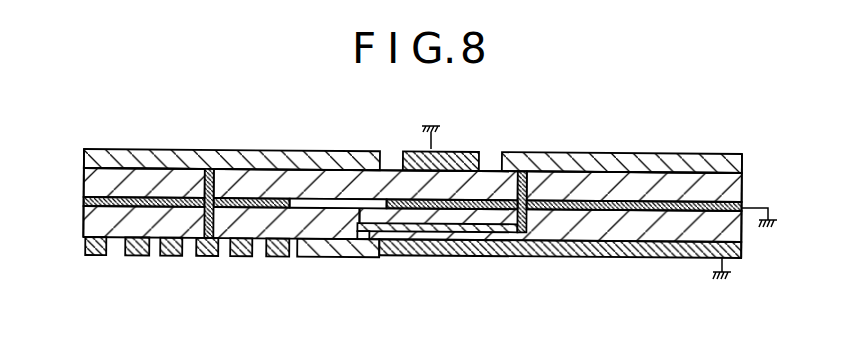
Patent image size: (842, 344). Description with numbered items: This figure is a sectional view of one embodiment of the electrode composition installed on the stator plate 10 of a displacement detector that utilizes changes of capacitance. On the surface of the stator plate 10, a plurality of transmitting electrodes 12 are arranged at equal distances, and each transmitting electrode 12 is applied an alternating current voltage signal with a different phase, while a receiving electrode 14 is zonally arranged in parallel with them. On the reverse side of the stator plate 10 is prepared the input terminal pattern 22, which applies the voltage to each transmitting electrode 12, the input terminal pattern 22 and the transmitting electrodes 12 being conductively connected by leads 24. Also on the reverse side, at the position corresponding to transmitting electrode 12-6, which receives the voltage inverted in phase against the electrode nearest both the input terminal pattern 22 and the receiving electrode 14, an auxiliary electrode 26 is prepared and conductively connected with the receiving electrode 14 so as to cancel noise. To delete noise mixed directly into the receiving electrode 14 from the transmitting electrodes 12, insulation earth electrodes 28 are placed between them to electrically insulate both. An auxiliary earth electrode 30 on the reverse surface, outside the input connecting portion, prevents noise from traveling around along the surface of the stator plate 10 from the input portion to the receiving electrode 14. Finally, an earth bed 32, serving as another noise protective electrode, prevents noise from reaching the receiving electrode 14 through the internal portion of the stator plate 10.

The stator plate 10 is at (742, 181).
The transmitting electrode 12 is at (100, 153).
The receiving electrode 14 is at (617, 160).
The input terminal pattern 22 is at (255, 262).
The lead 24 is at (215, 197).
The auxiliary electrode 26 is at (345, 249).
The insulation earth electrode 28 is at (467, 150).
The auxiliary earth electrode 30 is at (95, 257).
The earth bed 32 is at (195, 199).